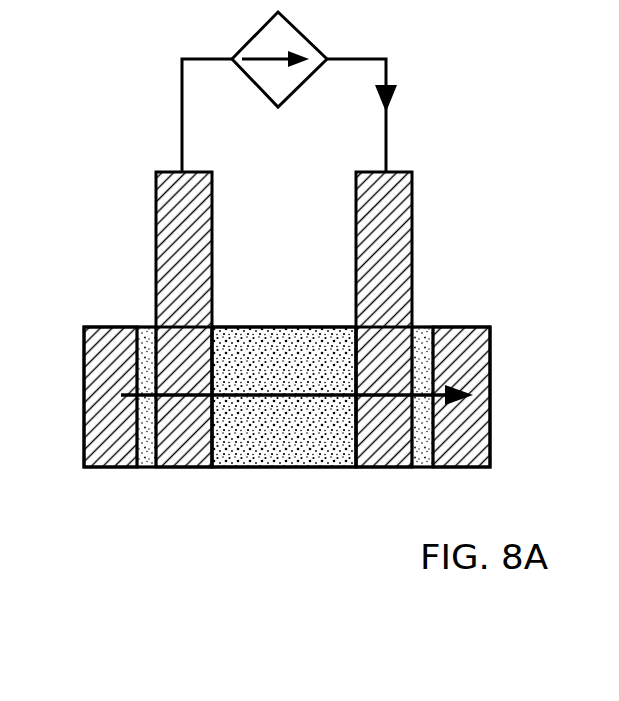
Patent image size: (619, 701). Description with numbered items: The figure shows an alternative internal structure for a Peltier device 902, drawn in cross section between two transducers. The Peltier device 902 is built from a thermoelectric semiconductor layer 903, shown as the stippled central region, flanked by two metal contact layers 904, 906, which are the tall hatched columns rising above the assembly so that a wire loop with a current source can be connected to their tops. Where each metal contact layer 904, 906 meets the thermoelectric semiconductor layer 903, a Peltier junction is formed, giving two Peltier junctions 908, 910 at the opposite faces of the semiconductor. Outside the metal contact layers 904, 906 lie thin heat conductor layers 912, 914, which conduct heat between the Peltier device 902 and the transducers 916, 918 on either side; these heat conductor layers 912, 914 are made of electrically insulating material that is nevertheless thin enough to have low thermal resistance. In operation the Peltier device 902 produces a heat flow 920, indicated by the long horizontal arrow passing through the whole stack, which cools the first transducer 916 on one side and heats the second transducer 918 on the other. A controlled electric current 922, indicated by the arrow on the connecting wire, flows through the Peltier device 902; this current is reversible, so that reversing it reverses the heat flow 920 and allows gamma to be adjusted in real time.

The Peltier device 902 is at (413, 472).
The thermoelectric semiconductor layer 903 is at (270, 330).
The metal contact layer 904 is at (357, 215).
The metal contact layer 906 is at (212, 172).
The Peltier junction 908 is at (212, 362).
The Peltier junction 910 is at (352, 362).
The heat conductor layer 912 is at (146, 326).
The heat conductor layer 914 is at (423, 326).
The first transducer 916 is at (103, 326).
The second transducer 918 is at (492, 366).
The heat flow 920 is at (459, 391).
The controlled electric current 922 is at (396, 101).